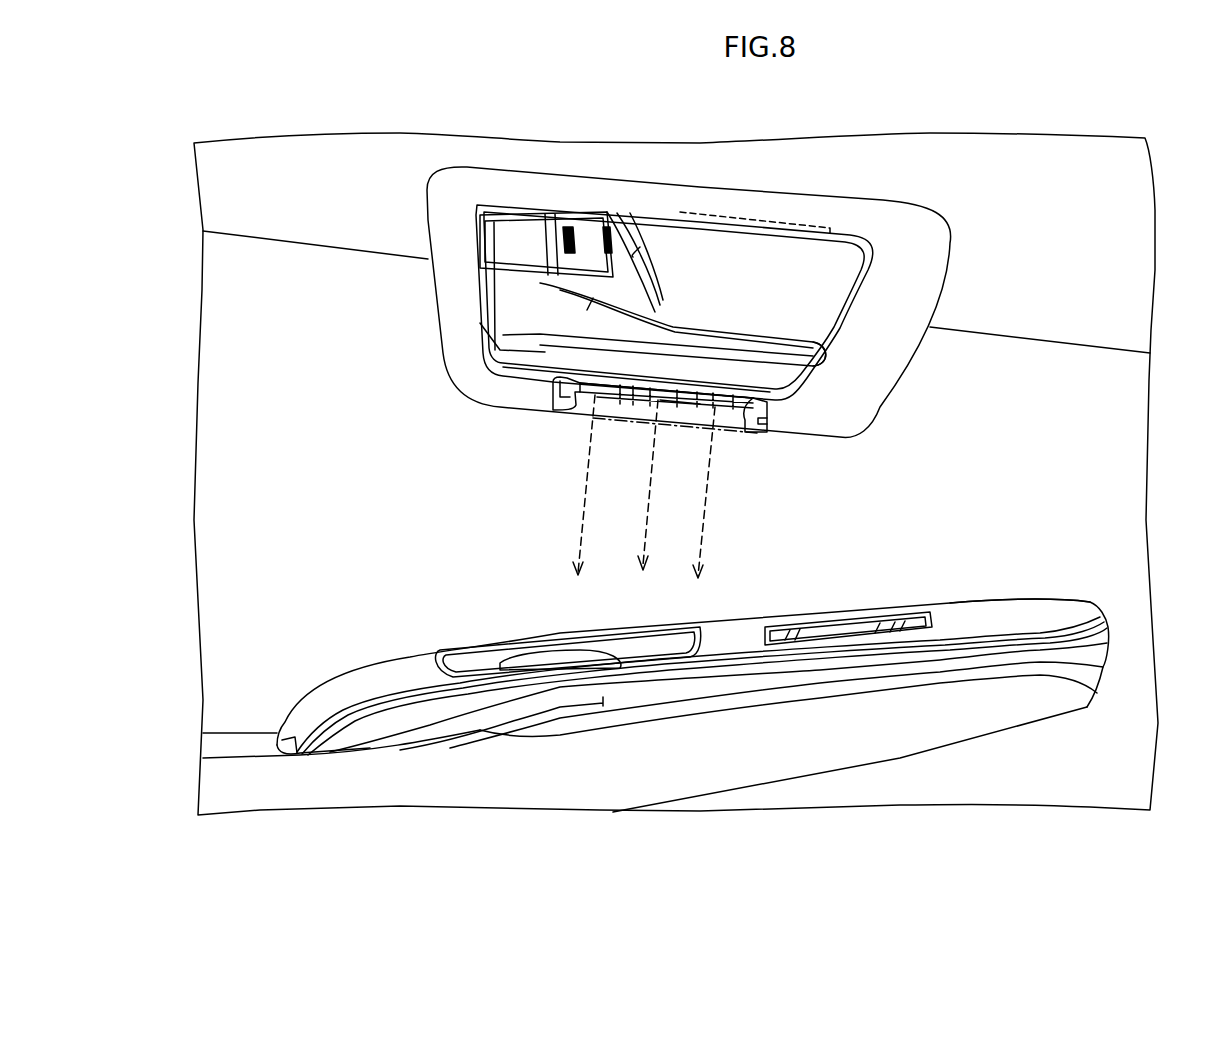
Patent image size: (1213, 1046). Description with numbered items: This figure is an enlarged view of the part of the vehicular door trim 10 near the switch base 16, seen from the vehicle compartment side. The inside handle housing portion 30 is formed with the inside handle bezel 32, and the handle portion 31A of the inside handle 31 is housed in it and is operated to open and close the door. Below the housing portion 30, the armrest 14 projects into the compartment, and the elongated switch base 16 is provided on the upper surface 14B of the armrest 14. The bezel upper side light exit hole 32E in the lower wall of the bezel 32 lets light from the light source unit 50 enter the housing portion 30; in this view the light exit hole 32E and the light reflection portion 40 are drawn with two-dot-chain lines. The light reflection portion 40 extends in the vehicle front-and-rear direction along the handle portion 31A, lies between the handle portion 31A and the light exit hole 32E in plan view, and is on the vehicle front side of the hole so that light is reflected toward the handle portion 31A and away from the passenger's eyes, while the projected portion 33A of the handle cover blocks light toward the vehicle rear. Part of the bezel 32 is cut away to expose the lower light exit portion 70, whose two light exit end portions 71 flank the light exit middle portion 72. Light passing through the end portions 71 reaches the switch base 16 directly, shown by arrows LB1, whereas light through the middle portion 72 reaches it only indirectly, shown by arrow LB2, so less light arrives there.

The vehicular door trim 10 is at (985, 120).
The armrest 14 is at (423, 777).
The upper surface of the armrest 14B is at (970, 617).
The switch base 16 is at (730, 638).
The inside handle housing portion 30 is at (867, 187).
The inside handle 31 is at (516, 298).
The handle portion 31A is at (713, 350).
The inside handle bezel 32 is at (569, 195).
The bezel upper side light exit hole 32E is at (610, 370).
The projected portion 33A is at (640, 247).
The light reflection portion 40 is at (725, 217).
The light source unit 50 is at (792, 420).
The lower light exit portion 70 is at (677, 444).
The light exit end portion 71 is at (583, 397).
The light exit middle portion 72 is at (680, 403).
The arrows LB1 is at (580, 537).
The arrow LB2 is at (650, 540).